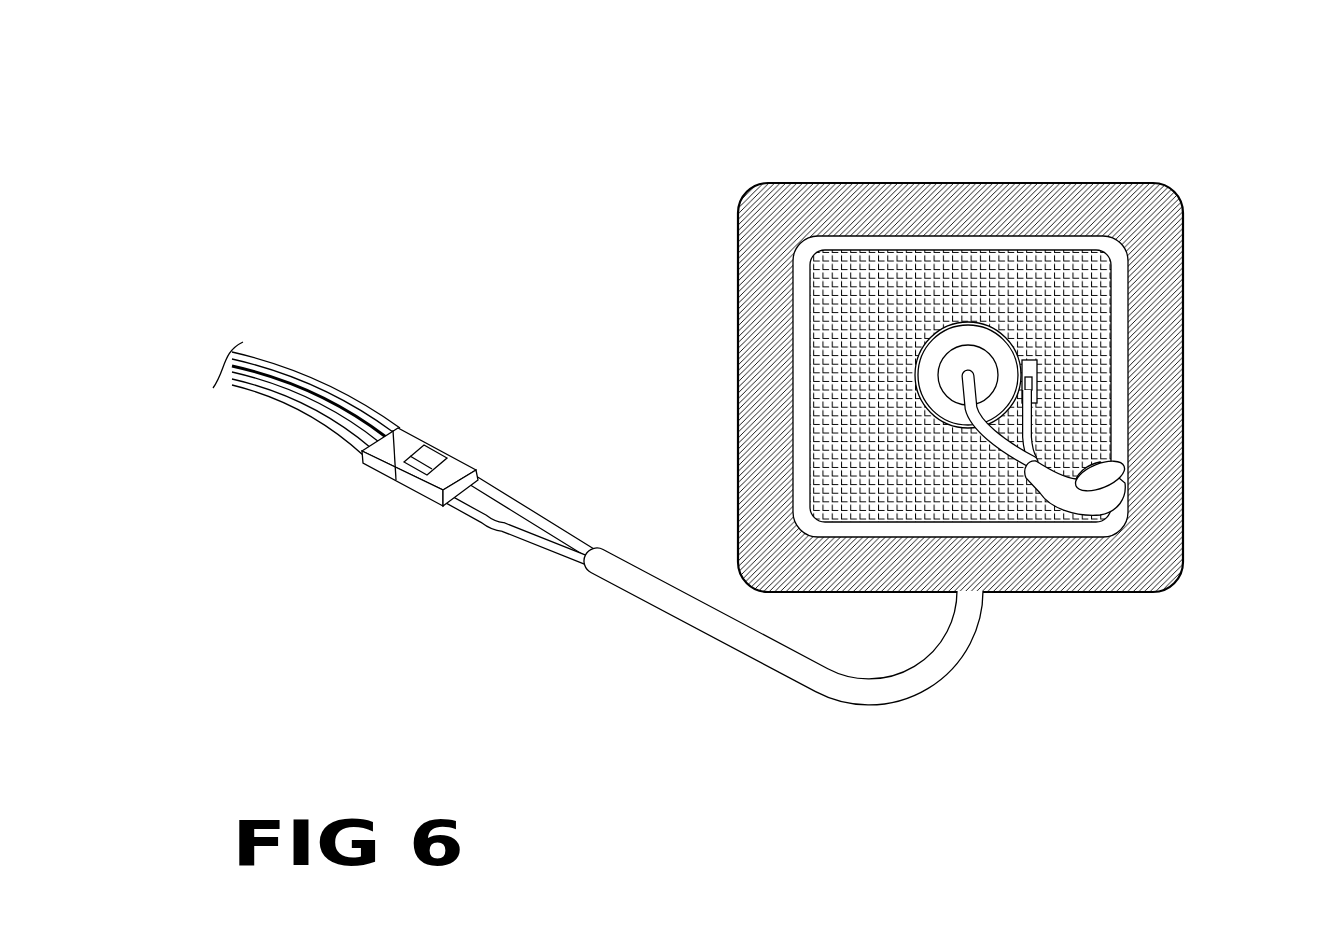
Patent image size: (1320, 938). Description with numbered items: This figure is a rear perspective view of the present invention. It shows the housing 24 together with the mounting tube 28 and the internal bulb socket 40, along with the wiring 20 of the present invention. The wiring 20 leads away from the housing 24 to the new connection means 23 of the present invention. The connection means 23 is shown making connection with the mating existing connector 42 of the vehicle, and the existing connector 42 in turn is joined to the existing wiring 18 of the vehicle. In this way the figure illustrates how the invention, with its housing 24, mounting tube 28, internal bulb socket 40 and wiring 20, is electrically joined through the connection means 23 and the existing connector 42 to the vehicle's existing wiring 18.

The existing wiring 18 is at (274, 374).
The wiring 20 is at (1033, 440).
The connection means 23 is at (412, 492).
The housing 24 is at (1141, 183).
The mounting tube 28 is at (797, 241).
The internal bulb socket 40 is at (915, 368).
The existing connector 42 is at (375, 470).